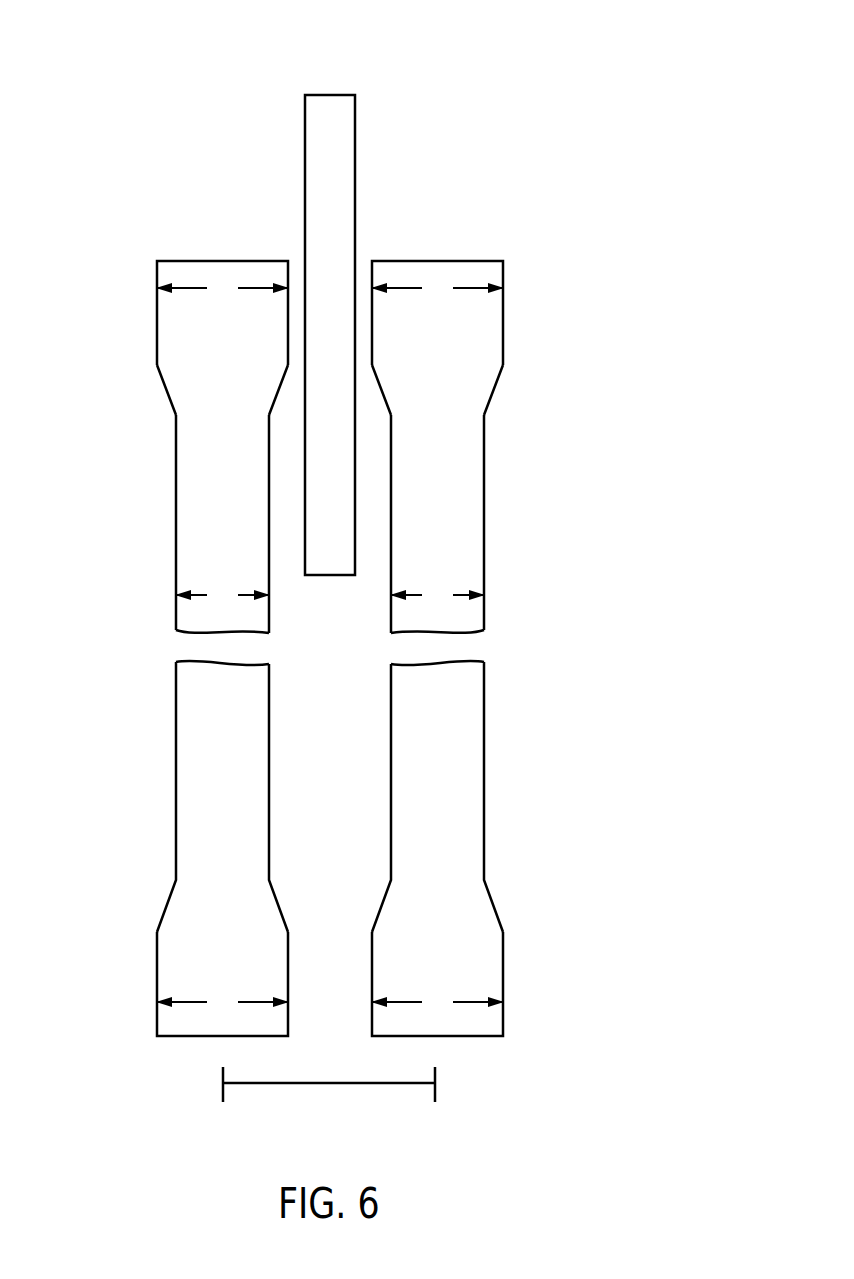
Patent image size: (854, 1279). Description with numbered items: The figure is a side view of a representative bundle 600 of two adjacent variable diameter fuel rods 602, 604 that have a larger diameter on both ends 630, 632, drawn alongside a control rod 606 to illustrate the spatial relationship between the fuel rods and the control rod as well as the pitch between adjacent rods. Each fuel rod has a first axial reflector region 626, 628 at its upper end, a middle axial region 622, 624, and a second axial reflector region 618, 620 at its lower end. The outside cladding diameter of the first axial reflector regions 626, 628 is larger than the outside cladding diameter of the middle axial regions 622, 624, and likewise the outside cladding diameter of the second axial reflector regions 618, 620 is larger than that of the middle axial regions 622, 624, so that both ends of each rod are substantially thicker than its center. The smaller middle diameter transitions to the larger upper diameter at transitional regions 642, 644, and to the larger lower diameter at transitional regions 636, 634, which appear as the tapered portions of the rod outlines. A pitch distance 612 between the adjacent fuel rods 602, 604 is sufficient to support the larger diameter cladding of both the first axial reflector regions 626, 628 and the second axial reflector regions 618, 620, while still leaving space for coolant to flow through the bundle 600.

The bundle 600 is at (483, 80).
The variable diameter fuel rod 602 is at (167, 314).
The variable diameter fuel rod 604 is at (488, 314).
The control rod 606 is at (317, 123).
The pitch distance 612 is at (330, 1083).
The second axial reflector region 618 is at (140, 971).
The second axial reflector region 620 is at (518, 971).
The middle axial region 622 is at (155, 595).
The middle axial region 624 is at (507, 598).
The first axial reflector region 626 is at (138, 338).
The first axial reflector region 628 is at (522, 336).
The end 630 is at (195, 1047).
The end 632 is at (188, 238).
The transitional region 634 is at (503, 888).
The transitional region 636 is at (328, 713).
The transitional region 642 is at (162, 398).
The transitional region 644 is at (502, 400).